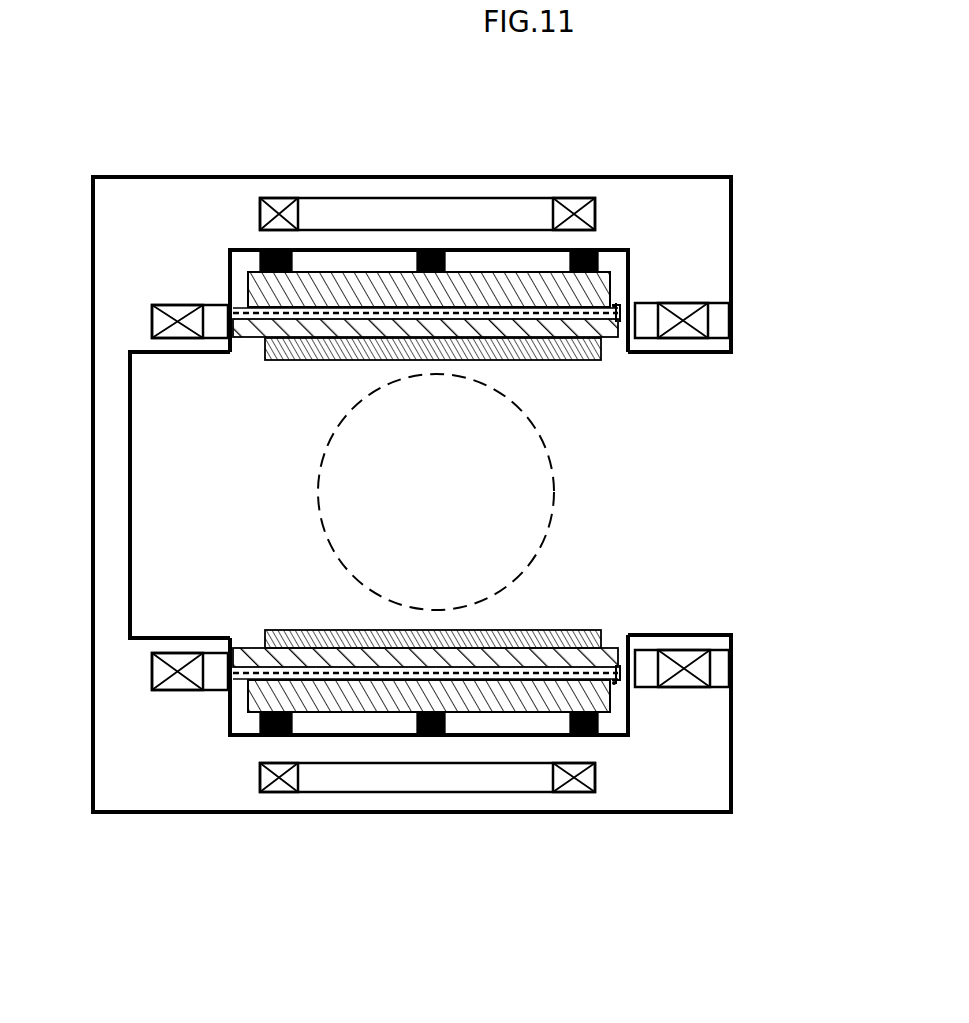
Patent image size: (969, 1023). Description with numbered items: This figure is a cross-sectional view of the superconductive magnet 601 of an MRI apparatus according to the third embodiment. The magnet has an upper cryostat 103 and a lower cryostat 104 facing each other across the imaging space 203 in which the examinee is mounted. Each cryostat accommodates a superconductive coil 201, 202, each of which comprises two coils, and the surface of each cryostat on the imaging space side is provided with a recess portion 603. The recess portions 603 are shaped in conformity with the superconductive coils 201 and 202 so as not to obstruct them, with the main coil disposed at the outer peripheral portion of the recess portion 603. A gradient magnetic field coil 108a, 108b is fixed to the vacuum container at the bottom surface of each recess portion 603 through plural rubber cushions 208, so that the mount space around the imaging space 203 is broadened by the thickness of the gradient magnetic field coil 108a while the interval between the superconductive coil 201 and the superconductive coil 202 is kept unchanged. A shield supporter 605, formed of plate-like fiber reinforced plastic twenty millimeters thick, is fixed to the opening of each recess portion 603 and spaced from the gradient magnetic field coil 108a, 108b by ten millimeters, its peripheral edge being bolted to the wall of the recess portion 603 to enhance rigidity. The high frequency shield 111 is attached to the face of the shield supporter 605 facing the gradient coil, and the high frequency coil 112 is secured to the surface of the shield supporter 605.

The upper cryostat 103 is at (283, 177).
The lower cryostat 104 is at (225, 814).
The superconductive coil 201 is at (512, 197).
The superconductive coil 202 is at (712, 663).
The rubber cushion 208 is at (597, 262).
The gradient magnetic field coil 108a is at (606, 289).
The gradient magnetic field coil 108b is at (612, 697).
The high frequency shield 111 is at (330, 321).
The high frequency coil 112 is at (548, 361).
The shield supporter 605 is at (241, 336).
The recess portion 603 is at (614, 307).
The imaging space 203 is at (555, 505).
The superconductive magnet 601 is at (402, 925).